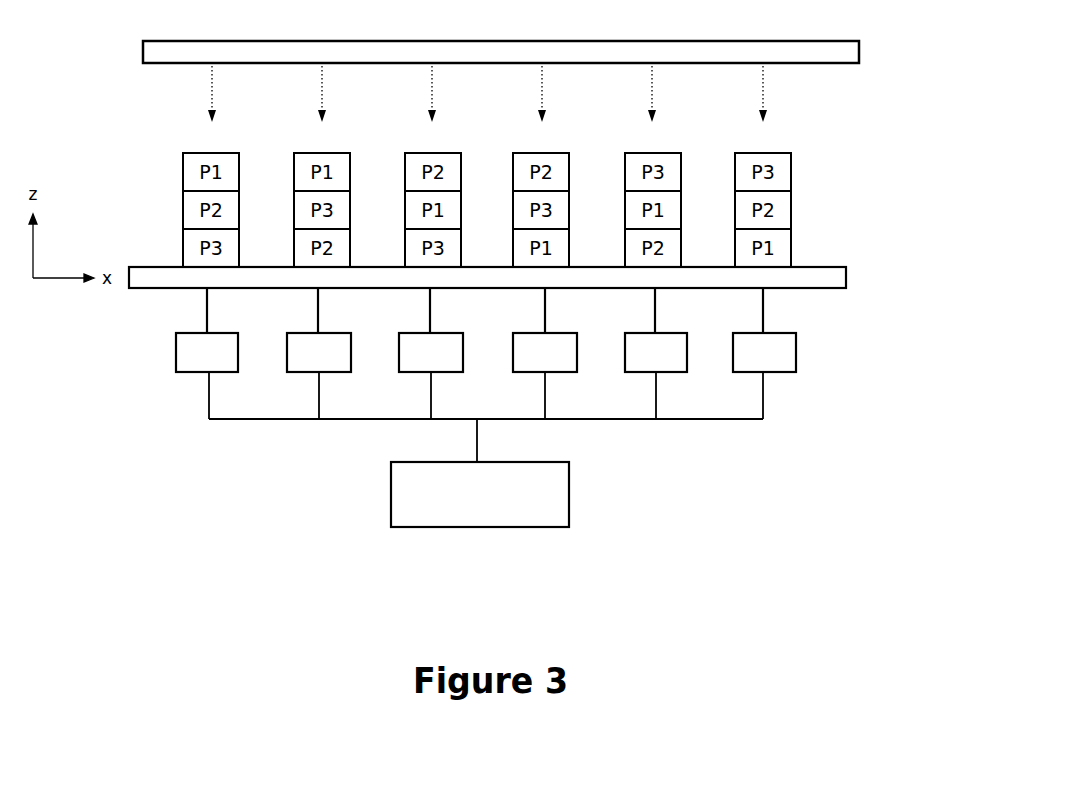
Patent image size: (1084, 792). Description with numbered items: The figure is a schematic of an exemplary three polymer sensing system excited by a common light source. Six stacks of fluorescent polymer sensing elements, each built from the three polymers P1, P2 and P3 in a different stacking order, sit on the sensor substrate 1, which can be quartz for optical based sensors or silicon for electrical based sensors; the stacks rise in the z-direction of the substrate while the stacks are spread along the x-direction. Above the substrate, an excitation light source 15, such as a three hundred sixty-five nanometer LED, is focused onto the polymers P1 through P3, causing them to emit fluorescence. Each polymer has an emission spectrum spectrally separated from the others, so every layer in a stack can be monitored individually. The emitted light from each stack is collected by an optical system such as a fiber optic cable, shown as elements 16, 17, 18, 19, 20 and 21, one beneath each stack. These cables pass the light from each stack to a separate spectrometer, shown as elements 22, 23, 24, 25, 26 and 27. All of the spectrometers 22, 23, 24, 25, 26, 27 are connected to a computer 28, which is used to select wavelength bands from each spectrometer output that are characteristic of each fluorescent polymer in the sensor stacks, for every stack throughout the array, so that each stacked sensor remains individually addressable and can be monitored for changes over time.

The sensor substrate 1 is at (847, 282).
The excitation light source 15 is at (860, 52).
The fiber optic cable 16 is at (208, 312).
The fiber optic cable 17 is at (319, 312).
The fiber optic cable 18 is at (431, 312).
The fiber optic cable 19 is at (546, 312).
The fiber optic cable 20 is at (656, 312).
The fiber optic cable 21 is at (764, 312).
The spectrometer 22 is at (207, 352).
The spectrometer 23 is at (319, 352).
The spectrometer 24 is at (431, 352).
The spectrometer 25 is at (545, 352).
The spectrometer 26 is at (656, 352).
The spectrometer 27 is at (764, 352).
The computer 28 is at (480, 494).